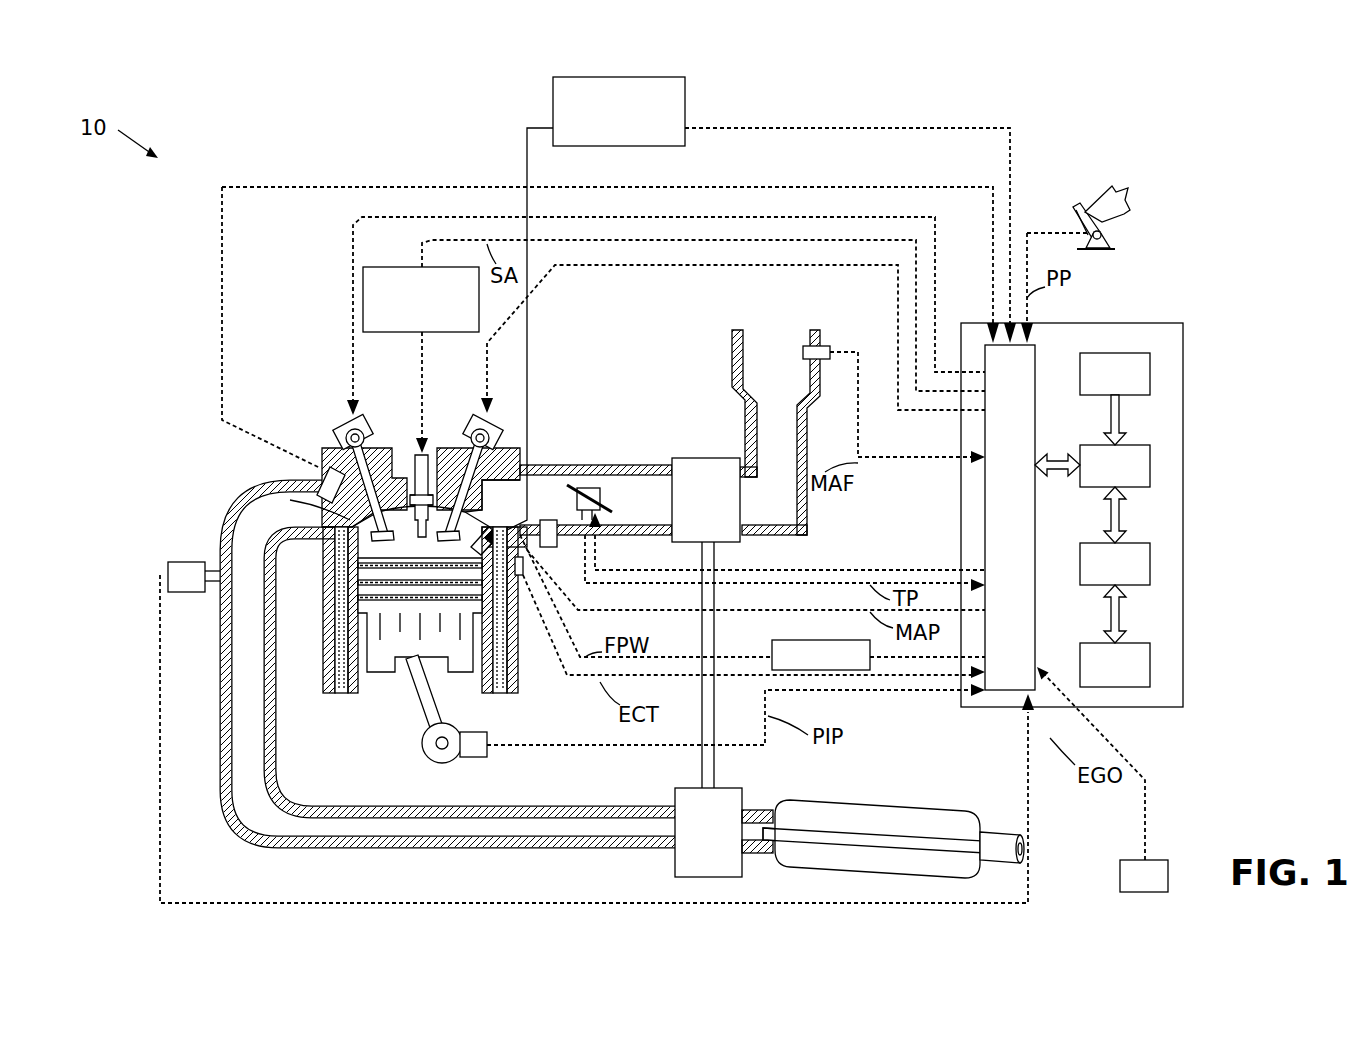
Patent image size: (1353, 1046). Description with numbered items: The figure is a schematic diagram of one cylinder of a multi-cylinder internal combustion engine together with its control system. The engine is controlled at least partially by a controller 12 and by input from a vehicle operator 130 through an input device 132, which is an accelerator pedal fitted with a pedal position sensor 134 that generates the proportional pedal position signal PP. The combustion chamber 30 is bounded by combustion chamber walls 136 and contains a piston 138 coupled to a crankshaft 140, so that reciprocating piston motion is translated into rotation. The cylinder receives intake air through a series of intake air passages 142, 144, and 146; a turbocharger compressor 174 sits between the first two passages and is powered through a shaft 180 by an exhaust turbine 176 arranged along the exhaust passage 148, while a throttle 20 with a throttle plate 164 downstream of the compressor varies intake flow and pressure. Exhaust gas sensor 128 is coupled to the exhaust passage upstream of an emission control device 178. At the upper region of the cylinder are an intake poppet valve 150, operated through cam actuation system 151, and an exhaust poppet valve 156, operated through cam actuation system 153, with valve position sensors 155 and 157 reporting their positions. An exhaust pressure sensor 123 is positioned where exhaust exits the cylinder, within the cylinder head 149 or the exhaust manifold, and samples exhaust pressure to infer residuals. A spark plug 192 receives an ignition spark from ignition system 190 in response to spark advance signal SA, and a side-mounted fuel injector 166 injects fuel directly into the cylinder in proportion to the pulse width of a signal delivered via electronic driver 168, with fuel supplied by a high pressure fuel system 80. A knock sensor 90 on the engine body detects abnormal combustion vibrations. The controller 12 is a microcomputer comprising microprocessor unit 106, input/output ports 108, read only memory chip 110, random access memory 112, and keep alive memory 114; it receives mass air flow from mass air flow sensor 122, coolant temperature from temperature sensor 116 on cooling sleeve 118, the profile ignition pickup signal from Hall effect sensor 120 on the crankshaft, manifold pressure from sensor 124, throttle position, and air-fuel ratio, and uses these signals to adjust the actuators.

The controller 12 is at (1183, 323).
The throttle 20 is at (592, 488).
The combustion chamber 30 is at (325, 565).
The high pressure fuel system 80 is at (685, 92).
The knock sensor 90 is at (1158, 889).
The microprocessor unit 106 is at (1150, 465).
The input/output ports 108 is at (1040, 352).
The read only memory chip 110 is at (1150, 372).
The random access memory 112 is at (1150, 565).
The keep alive memory 114 is at (1150, 665).
The temperature sensor 116 is at (523, 590).
The cooling sleeve 118 is at (500, 665).
The Hall effect sensor 120 is at (480, 757).
The mass air flow sensor 122 is at (820, 346).
The exhaust pressure sensor 123 is at (320, 490).
The manifold pressure sensor 124 is at (557, 560).
The exhaust gas sensor 128 is at (168, 567).
The vehicle operator 130 is at (1125, 198).
The input device 132 is at (1075, 212).
The pedal position sensor 134 is at (1110, 236).
The combustion chamber walls 136 is at (357, 692).
The piston 138 is at (405, 645).
The crankshaft 140 is at (430, 760).
The intake air passage 142 is at (798, 377).
The intake air passage 144 is at (667, 512).
The intake air passage 146 is at (567, 512).
The exhaust passage 148 is at (282, 539).
The cylinder head 149 is at (325, 455).
The intake poppet valve 150 is at (442, 505).
The cam actuation system 151 is at (472, 418).
The cam actuation system 153 is at (355, 418).
The valve position sensor 155 is at (528, 422).
The exhaust poppet valve 156 is at (270, 486).
The valve position sensor 157 is at (340, 428).
The throttle plate 164 is at (570, 487).
The fuel injector 166 is at (492, 530).
The electronic driver 168 is at (775, 640).
The compressor 174 is at (690, 458).
The exhaust turbine 176 is at (675, 860).
The emission control device 178 is at (935, 805).
The shaft 180 is at (716, 765).
The ignition system 190 is at (374, 267).
The spark plug 192 is at (414, 478).